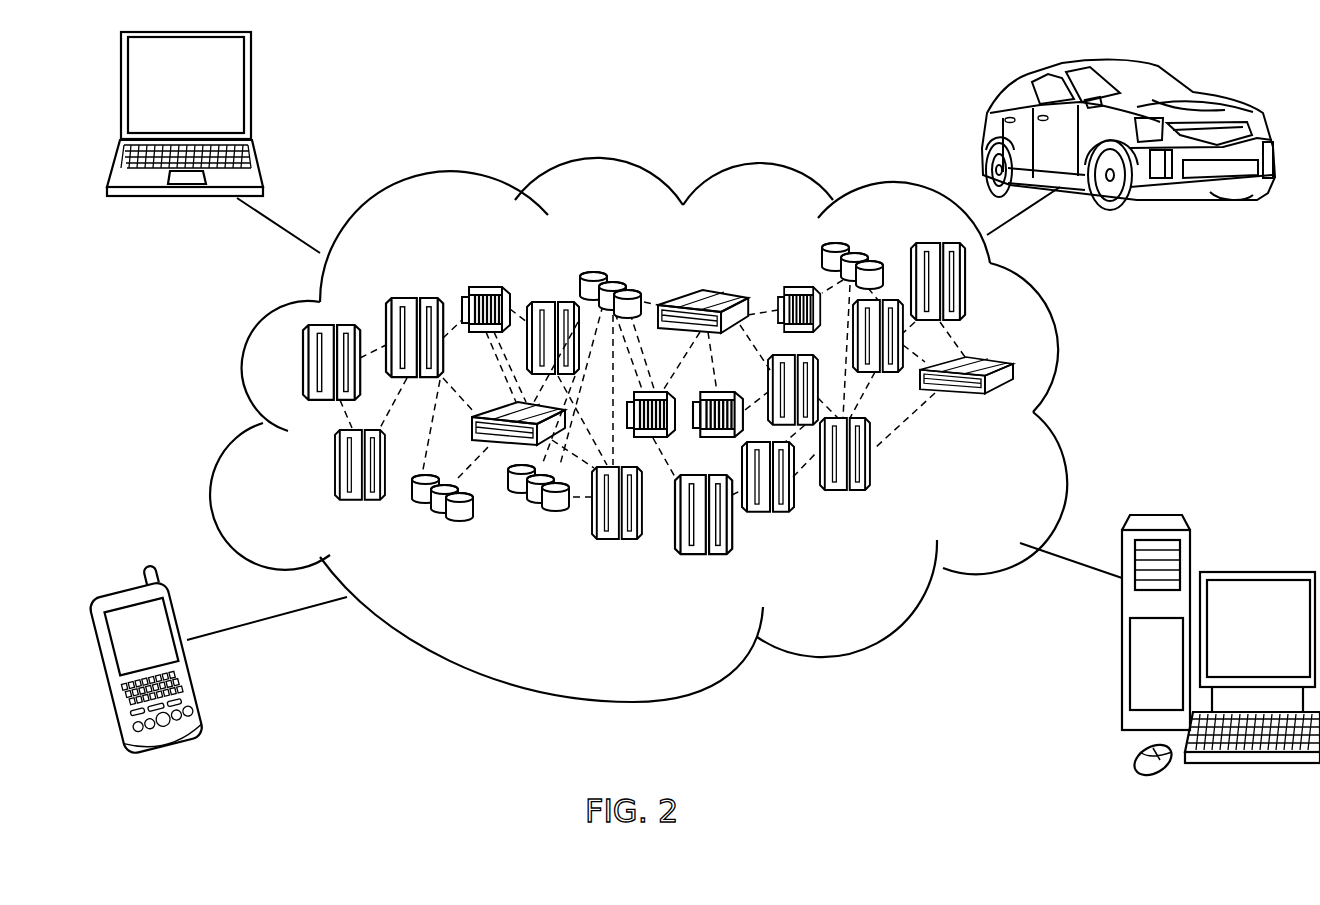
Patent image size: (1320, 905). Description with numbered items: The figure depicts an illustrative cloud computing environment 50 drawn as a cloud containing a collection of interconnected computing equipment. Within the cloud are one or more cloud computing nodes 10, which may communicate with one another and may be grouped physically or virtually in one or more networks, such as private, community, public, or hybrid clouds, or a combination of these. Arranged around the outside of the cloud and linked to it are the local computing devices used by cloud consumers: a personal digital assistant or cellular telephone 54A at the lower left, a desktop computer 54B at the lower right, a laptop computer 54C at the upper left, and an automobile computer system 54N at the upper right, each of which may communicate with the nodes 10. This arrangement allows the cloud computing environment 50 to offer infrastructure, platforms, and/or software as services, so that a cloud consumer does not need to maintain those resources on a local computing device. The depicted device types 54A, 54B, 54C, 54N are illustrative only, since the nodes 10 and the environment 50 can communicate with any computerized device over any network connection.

The cloud computing nodes 10 is at (1020, 419).
The cloud computing environment 50 is at (1058, 332).
The personal digital assistant or cellular telephone 54A is at (95, 668).
The desktop computer 54B is at (1250, 572).
The laptop computer 54C is at (120, 92).
The automobile computer system 54N is at (1178, 94).